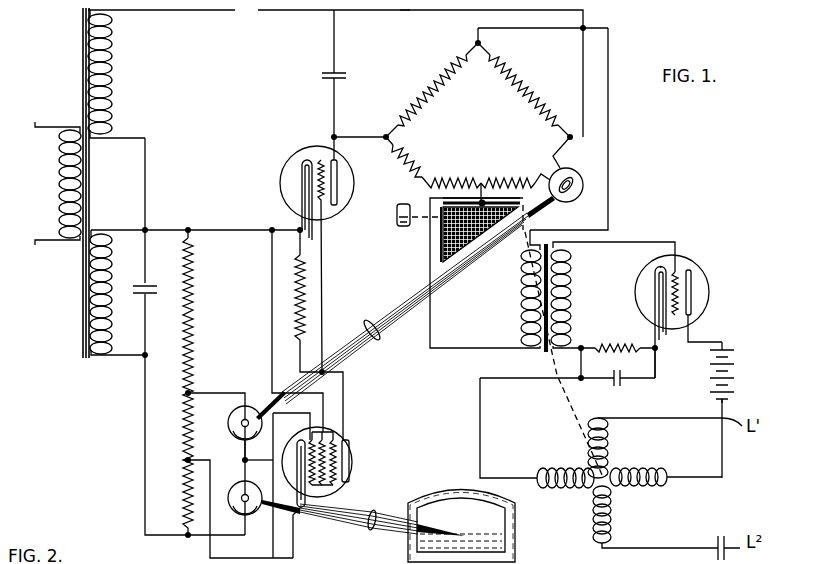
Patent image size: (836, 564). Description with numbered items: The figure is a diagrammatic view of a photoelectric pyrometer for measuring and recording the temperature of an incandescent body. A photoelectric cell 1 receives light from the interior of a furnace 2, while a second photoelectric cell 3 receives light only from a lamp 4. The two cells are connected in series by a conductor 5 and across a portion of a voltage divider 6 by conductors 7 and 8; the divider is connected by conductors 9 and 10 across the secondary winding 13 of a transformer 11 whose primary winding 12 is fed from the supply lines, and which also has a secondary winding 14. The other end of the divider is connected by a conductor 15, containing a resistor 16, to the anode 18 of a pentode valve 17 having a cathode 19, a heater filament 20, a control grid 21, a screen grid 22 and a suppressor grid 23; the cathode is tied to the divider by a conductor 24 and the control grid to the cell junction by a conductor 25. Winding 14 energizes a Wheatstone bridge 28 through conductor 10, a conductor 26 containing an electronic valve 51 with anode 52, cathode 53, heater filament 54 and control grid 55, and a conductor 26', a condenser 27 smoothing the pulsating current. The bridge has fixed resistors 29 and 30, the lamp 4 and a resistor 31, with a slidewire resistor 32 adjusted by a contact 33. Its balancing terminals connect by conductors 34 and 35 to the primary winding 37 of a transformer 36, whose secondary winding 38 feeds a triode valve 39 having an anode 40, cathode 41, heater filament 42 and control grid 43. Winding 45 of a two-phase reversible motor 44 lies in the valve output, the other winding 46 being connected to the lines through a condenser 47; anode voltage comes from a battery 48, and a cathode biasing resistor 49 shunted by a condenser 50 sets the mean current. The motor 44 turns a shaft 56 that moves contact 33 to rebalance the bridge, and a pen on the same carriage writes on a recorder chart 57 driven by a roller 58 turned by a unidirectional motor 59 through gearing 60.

The photoelectric cell 1 is at (259, 514).
The furnace 2 is at (450, 492).
The second photoelectric cell 3 is at (248, 406).
The lamp 4 is at (574, 200).
The conductor 5 is at (240, 453).
The voltage divider 6 is at (184, 408).
The conductor 7 is at (222, 542).
The conductor 8 is at (205, 393).
The conductor 9 is at (145, 432).
The conductor 10 is at (163, 230).
The transformer 11 is at (82, 296).
The primary winding 12 is at (58, 186).
The secondary winding 13 is at (112, 284).
The secondary winding 14 is at (112, 68).
The conductor 15 is at (344, 392).
The resistor 16 is at (295, 296).
The electronic valve 17 is at (348, 441).
The anode 18 is at (349, 458).
The cathode 19 is at (278, 471).
The heater filament 20 is at (304, 492).
The control grid 21 is at (320, 490).
The screen grid 22 is at (330, 484).
The suppressor grid 23 is at (338, 476).
The conductor 24 is at (293, 548).
The conductor 25 is at (280, 413).
The conductor 26 is at (360, 129).
The conductor 26' is at (394, 21).
The condenser 27 is at (321, 76).
The Wheatstone bridge 28 is at (488, 92).
The fixed resistor 29 is at (437, 82).
The fixed resistor 30 is at (533, 86).
The resistor 31 is at (414, 162).
The slidewire resistor 32 is at (476, 183).
The contact 33 is at (490, 183).
The conductor 34 is at (609, 185).
The conductor 35 is at (444, 258).
The transformer 36 is at (545, 352).
The primary winding 37 is at (520, 290).
The secondary winding 38 is at (572, 288).
The electronic valve 39 is at (709, 296).
The anode 40 is at (692, 280).
The cathode 41 is at (652, 286).
The heater filament 42 is at (659, 266).
The control grid 43 is at (676, 316).
The two-phase reversible electrical motor 44 is at (574, 452).
The motor winding 45 is at (637, 487).
The motor winding 46 is at (595, 510).
The condenser 47 is at (721, 536).
The battery 48 is at (733, 378).
The cathode biasing resistor 49 is at (630, 344).
The condenser 50 is at (616, 370).
The electronic valve 51 is at (350, 201).
The anode 52 is at (338, 174).
The cathode 53 is at (284, 180).
The heater filament 54 is at (307, 158).
The control grid 55 is at (321, 158).
The shaft 56 is at (530, 214).
The recorder chart 57 is at (446, 242).
The roller 58 is at (440, 204).
The unidirectional motor 59 is at (396, 219).
The gearing 60 is at (410, 226).